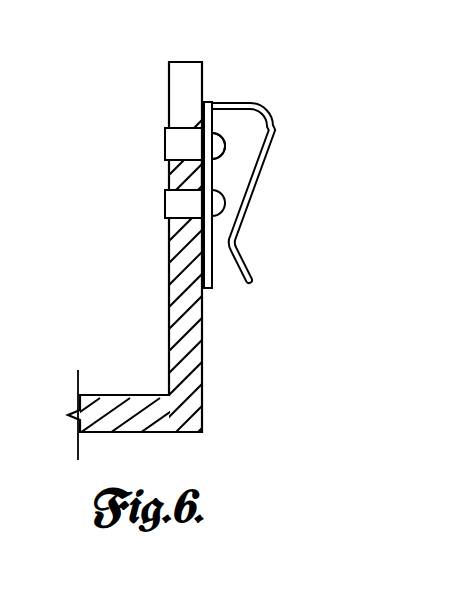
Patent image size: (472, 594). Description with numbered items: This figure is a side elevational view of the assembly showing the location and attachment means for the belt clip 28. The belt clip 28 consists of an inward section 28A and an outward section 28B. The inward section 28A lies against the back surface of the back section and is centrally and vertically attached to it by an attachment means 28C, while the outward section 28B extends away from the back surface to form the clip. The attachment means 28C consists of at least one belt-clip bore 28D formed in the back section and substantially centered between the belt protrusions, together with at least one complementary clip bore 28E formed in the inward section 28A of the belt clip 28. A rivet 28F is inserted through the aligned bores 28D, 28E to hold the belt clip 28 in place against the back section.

The belt clip 28 is at (191, 167).
The inward section 28A is at (210, 290).
The outward section 28B is at (274, 128).
The attachment means 28C is at (172, 161).
The belt-clip bore 28D is at (170, 132).
The clip bore 28E is at (183, 144).
The rivet 28F is at (218, 146).